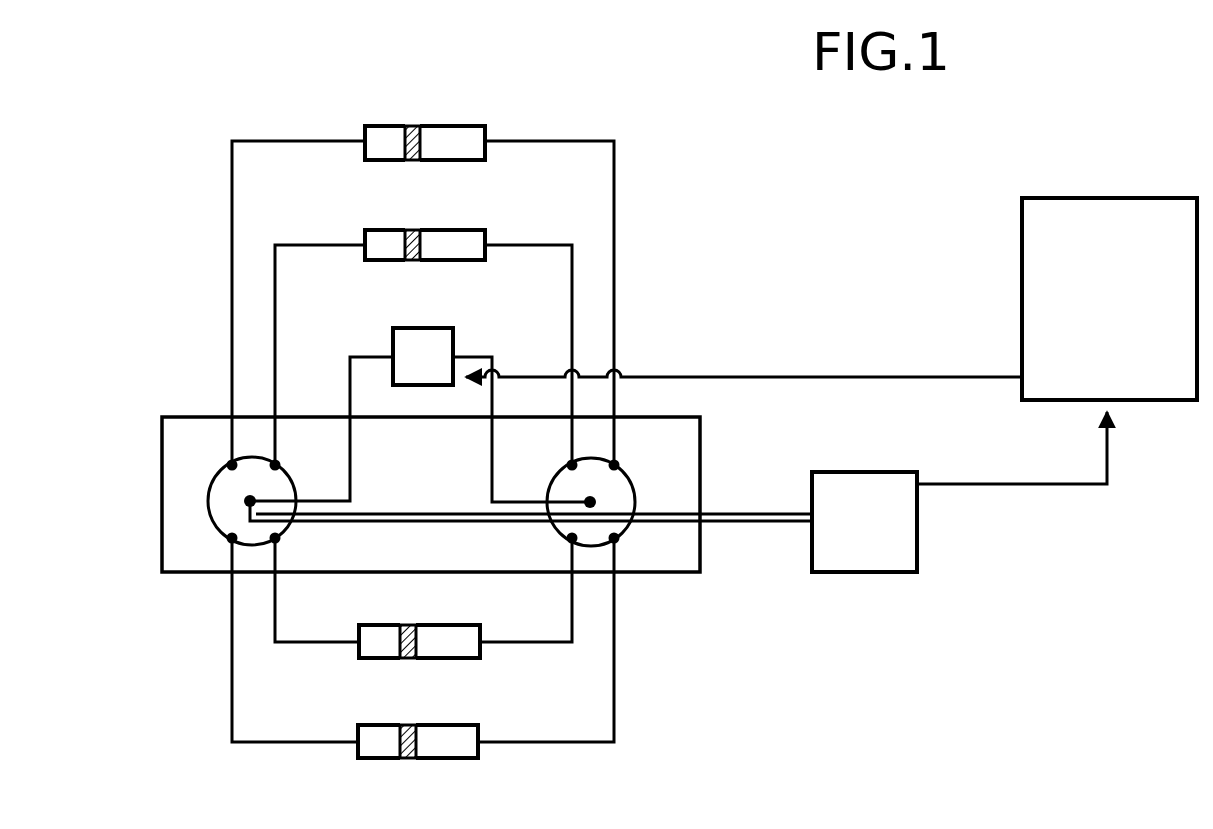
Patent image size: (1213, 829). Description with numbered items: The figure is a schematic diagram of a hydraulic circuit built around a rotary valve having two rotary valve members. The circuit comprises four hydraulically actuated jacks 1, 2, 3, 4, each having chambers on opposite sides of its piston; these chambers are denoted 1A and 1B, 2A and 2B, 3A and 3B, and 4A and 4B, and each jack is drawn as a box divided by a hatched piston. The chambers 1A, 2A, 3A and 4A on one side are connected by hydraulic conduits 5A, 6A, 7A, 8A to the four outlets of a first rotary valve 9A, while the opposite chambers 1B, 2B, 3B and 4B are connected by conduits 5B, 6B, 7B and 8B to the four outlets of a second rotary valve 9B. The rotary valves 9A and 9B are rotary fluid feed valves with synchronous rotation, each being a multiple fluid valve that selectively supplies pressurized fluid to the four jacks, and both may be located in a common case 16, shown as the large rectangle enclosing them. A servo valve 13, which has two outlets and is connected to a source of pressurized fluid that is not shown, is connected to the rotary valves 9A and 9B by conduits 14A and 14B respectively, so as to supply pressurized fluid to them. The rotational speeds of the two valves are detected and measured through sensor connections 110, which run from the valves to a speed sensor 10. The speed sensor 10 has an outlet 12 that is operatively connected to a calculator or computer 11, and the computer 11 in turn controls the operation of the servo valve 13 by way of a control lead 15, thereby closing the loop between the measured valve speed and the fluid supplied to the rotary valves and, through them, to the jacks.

The hydraulically actuated jack 1 is at (431, 118).
The chamber 1A is at (378, 135).
The chamber 1B is at (465, 135).
The hydraulically actuated jack 2 is at (431, 228).
The chamber 2A is at (378, 240).
The chamber 2B is at (465, 243).
The hydraulically actuated jack 3 is at (434, 622).
The chamber 3A is at (378, 633).
The chamber 3B is at (465, 630).
The hydraulically actuated jack 4 is at (437, 720).
The chamber 4A is at (378, 735).
The chamber 4B is at (466, 732).
The hydraulic conduit 5A is at (232, 201).
The conduit 5B is at (614, 199).
The hydraulic conduit 6A is at (275, 306).
The conduit 6B is at (572, 303).
The hydraulic conduit 7A is at (275, 617).
The conduit 7B is at (572, 620).
The hydraulic conduit 8A is at (232, 708).
The conduit 8B is at (614, 710).
The first rotary valve 9A is at (200, 483).
The second rotary valve 9B is at (640, 484).
The speed sensor 10 is at (862, 574).
The calculator or computer 11 is at (1138, 304).
The outlet 12 is at (1018, 486).
The servo valve 13 is at (432, 340).
The conduit 14A is at (365, 357).
The conduit 14B is at (470, 355).
The control lead 15 is at (852, 376).
The common case 16 is at (173, 538).
The sensor connections 110 is at (760, 520).